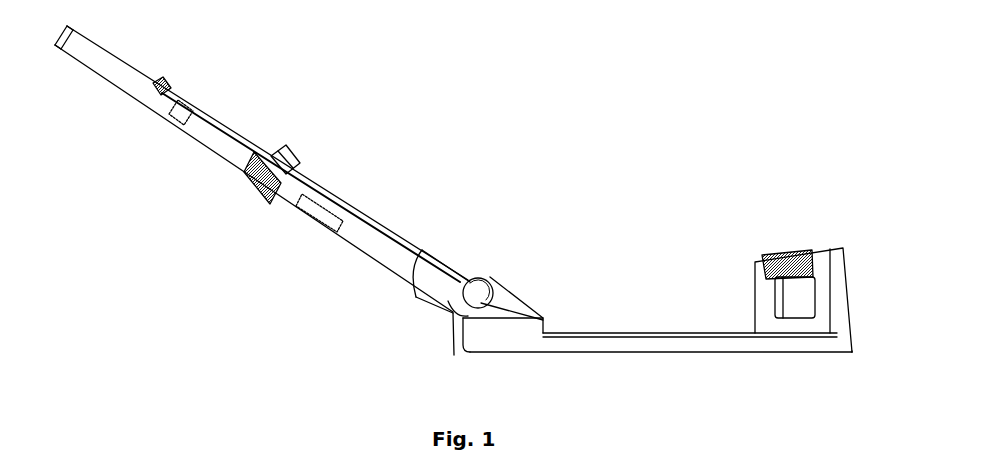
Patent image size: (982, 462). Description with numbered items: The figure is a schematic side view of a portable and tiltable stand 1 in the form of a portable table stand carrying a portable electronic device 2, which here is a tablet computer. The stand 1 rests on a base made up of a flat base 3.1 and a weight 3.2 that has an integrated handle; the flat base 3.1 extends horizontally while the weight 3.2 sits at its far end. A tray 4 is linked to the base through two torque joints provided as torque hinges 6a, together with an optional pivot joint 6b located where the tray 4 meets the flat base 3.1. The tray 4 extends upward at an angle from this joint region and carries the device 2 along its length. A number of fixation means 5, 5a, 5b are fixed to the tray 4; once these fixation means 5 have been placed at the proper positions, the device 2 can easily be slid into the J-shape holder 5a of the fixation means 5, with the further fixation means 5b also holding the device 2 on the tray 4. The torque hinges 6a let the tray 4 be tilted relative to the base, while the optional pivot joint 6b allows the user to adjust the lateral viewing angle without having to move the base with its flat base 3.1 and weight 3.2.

The portable and tiltable stand 1 is at (339, 84).
The portable electronic device 2 is at (78, 48).
The flat base 3.1 is at (676, 342).
The weight 3.2 is at (838, 262).
The tray 4 is at (345, 210).
The fixation means 5 is at (457, 345).
The J-shape holder 5a is at (257, 195).
The fixation means 5b is at (294, 157).
The torque hinges 6a is at (478, 277).
The pivot joint 6b is at (543, 322).